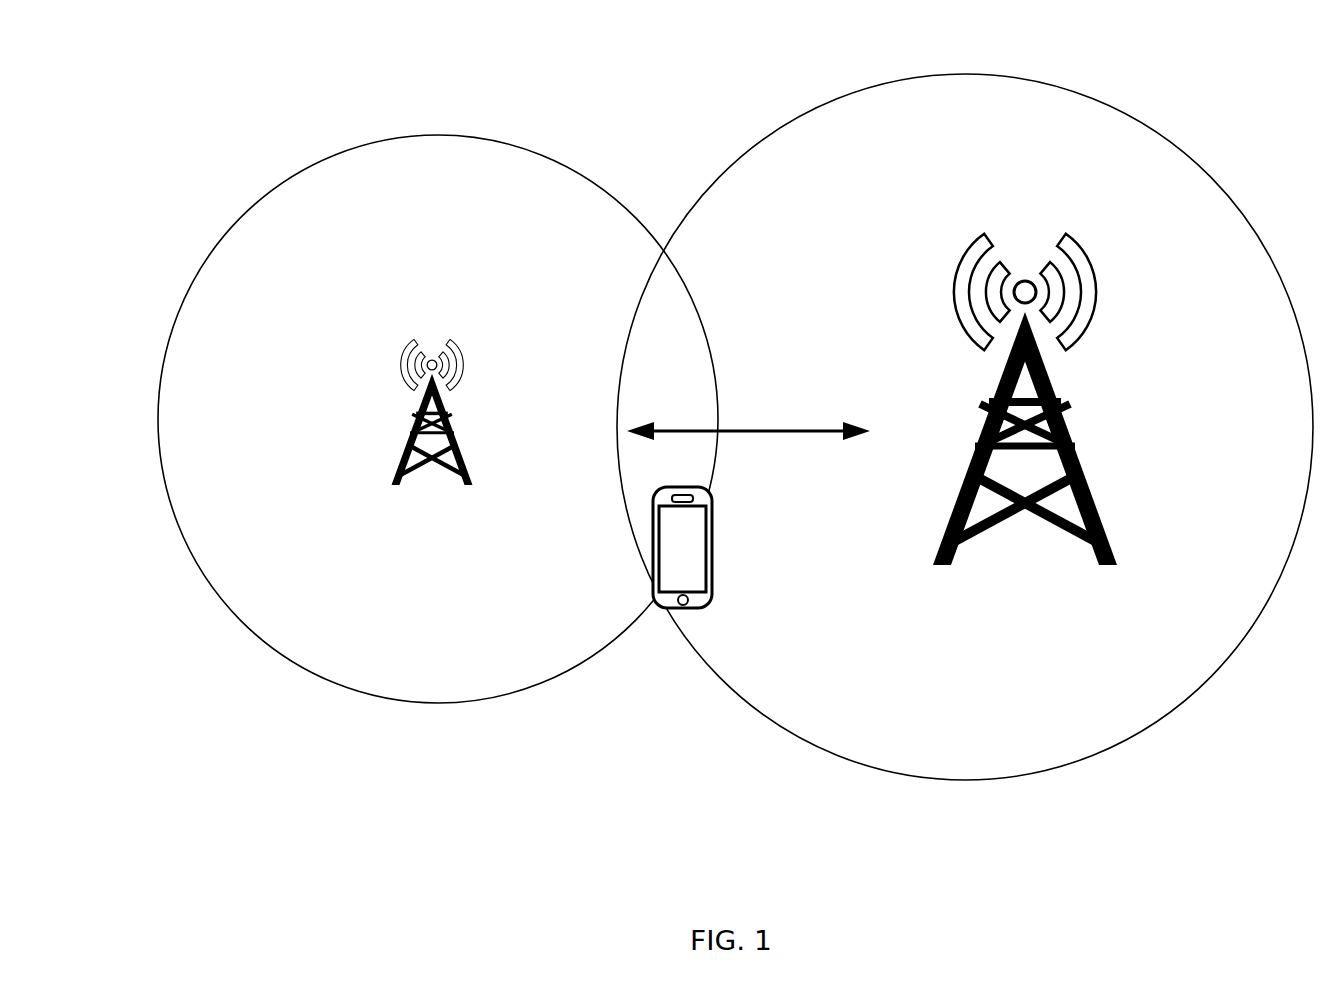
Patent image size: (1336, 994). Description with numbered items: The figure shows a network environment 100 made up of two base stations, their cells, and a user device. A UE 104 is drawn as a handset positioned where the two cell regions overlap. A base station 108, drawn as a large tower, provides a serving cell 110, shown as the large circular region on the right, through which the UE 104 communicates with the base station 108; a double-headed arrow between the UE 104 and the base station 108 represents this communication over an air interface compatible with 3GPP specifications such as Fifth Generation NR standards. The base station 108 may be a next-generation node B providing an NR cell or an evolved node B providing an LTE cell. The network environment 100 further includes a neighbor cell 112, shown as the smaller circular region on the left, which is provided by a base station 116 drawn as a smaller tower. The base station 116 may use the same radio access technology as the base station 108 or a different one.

The network environment 100 is at (232, 73).
The UE 104 is at (712, 570).
The base station 108 is at (1083, 466).
The serving cell 110 is at (1015, 782).
The neighbor cell 112 is at (372, 697).
The base station 116 is at (398, 463).